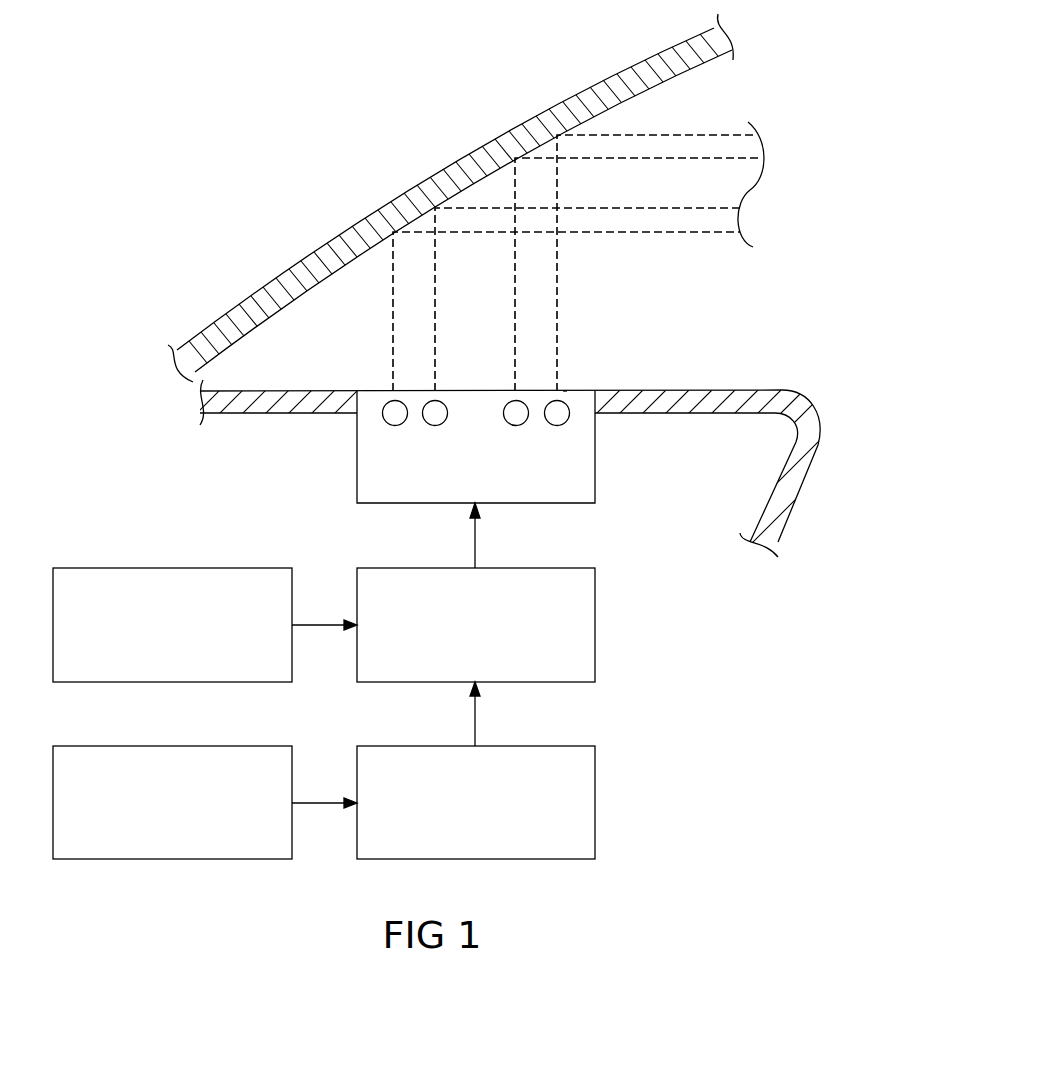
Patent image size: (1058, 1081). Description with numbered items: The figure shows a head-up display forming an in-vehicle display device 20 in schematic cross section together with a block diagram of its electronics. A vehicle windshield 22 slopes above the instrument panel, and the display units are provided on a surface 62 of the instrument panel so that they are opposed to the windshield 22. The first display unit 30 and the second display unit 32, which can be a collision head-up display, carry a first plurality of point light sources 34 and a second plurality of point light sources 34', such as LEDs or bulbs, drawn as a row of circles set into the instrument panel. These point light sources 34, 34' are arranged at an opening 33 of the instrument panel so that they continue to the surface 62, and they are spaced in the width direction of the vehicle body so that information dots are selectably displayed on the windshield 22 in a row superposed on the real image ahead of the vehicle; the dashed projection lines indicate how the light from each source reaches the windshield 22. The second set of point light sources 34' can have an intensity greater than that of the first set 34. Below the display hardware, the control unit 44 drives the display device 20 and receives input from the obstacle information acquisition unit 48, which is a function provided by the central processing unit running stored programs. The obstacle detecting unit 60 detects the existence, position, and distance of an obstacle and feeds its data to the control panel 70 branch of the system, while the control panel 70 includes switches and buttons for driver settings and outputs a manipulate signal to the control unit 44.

The in-vehicle display device 20 is at (488, 460).
The windshield 22 is at (543, 115).
The first display unit 30 is at (387, 402).
The second display unit 32 is at (570, 401).
The opening 33 is at (565, 389).
The point light sources 34 is at (455, 381).
The second set of point light sources 34' is at (497, 392).
The control unit 44 is at (487, 638).
The obstacle information acquisition unit 48 is at (184, 638).
The obstacle detecting unit 60 is at (184, 816).
The surface 62 is at (690, 390).
The control panel 70 is at (487, 816).